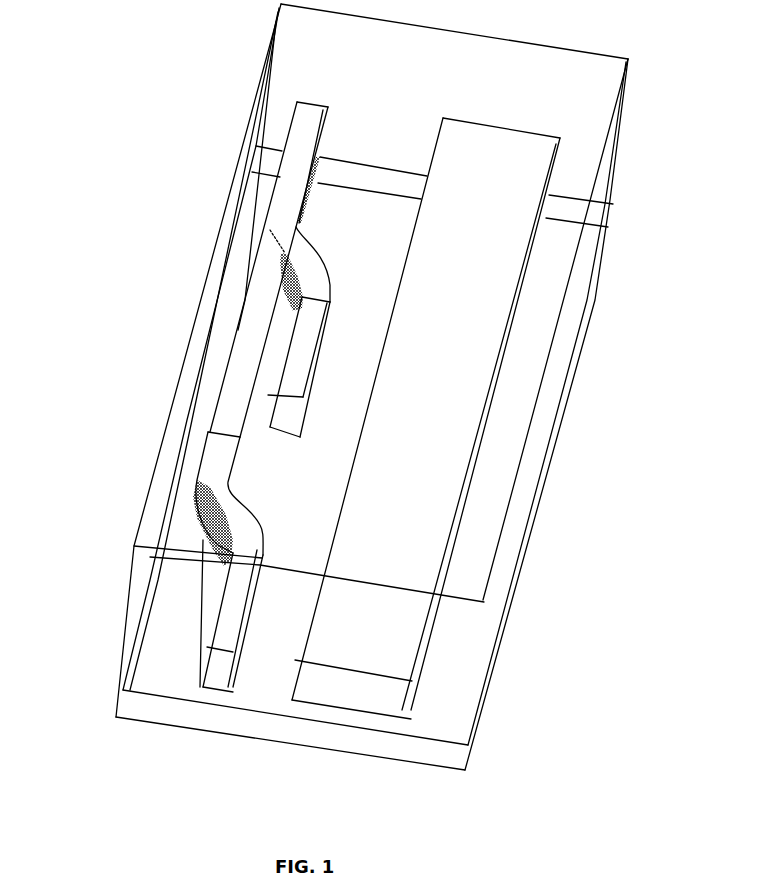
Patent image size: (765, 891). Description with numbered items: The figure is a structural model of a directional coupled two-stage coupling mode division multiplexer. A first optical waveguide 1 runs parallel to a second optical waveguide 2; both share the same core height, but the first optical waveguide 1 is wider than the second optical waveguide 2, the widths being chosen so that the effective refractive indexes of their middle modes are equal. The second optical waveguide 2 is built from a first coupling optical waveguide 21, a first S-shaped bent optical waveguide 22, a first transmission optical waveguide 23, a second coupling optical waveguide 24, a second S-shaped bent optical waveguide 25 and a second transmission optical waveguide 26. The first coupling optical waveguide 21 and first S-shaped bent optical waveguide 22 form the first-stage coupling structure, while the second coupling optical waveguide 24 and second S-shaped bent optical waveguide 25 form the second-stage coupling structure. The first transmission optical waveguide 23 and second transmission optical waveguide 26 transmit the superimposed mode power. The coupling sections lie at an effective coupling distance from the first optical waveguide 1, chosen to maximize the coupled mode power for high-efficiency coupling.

The first optical waveguide 1 is at (352, 630).
The second optical waveguide 2 is at (183, 445).
The first coupling optical waveguide 21 is at (232, 612).
The first S-shaped bent optical waveguide 22 is at (230, 508).
The first transmission optical waveguide 23 is at (232, 412).
The second coupling optical waveguide 24 is at (302, 347).
The second S-shaped bent optical waveguide 25 is at (310, 280).
The second transmission optical waveguide 26 is at (302, 158).